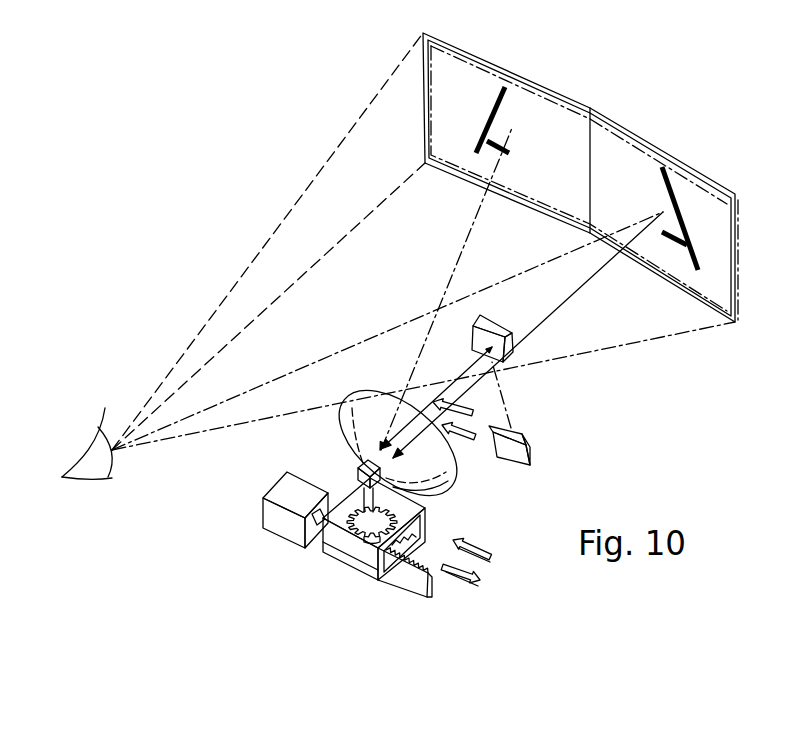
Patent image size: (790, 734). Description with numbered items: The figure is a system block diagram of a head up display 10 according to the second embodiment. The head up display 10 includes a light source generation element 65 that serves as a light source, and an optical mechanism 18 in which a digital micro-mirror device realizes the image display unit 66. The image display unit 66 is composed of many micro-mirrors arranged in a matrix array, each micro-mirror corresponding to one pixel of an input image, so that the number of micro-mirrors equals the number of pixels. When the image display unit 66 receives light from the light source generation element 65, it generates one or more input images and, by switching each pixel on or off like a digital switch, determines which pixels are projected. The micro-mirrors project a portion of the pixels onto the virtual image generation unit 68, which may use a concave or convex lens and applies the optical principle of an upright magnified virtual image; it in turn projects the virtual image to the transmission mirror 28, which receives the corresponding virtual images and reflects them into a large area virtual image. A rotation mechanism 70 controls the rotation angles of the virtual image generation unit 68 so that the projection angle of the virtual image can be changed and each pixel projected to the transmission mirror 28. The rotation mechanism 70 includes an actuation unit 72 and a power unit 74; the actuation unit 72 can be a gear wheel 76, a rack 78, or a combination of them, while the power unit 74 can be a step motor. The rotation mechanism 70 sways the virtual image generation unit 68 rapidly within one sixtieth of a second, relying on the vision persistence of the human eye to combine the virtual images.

The head up display 10 is at (217, 120).
The optical mechanism 18 is at (118, 526).
The transmission mirror 28 is at (535, 112).
The light source generation element 65 is at (535, 447).
The image display unit 66 is at (498, 330).
The virtual image generation unit 68 is at (443, 482).
The rotation mechanism 70 is at (312, 522).
The actuation unit 72 is at (328, 561).
The power unit 74 is at (275, 495).
The gear wheel 76 is at (360, 512).
The rack 78 is at (408, 555).